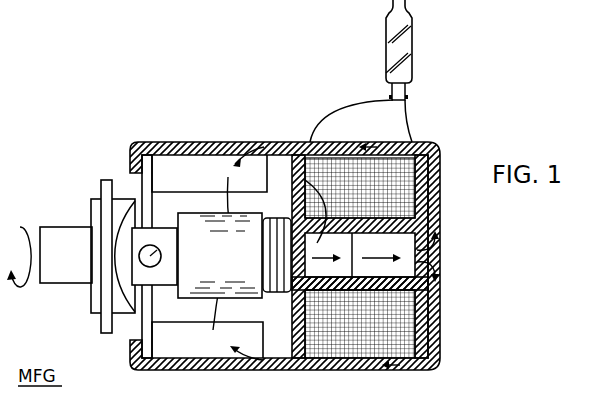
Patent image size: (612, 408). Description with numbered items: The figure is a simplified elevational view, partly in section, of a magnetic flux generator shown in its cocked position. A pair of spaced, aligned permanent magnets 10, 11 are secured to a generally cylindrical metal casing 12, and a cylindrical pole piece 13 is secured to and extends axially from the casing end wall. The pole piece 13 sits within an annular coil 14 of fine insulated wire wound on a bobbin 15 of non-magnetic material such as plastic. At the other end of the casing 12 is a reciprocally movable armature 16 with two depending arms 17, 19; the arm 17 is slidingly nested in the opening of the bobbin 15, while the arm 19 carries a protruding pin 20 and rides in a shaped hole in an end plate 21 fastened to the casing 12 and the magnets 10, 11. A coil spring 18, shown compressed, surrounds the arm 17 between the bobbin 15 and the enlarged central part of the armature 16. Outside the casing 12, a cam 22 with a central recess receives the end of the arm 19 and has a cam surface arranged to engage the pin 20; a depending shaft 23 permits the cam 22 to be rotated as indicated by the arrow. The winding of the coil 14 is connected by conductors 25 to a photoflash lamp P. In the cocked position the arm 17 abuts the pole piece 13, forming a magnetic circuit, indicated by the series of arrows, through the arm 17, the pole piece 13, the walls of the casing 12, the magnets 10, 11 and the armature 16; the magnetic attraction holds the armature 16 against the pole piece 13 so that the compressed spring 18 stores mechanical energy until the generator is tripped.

The permanent magnet 10 is at (185, 165).
The permanent magnet 11 is at (178, 348).
The metal casing 12 is at (312, 365).
The pole piece 13 is at (432, 224).
The annular coil 14 is at (405, 173).
The bobbin 15 is at (416, 287).
The armature 16 is at (190, 287).
The armature arm 17 is at (293, 182).
The coil spring 18 is at (273, 290).
The armature arm 19 is at (170, 259).
The pin 20 is at (153, 248).
The end plate 21 is at (143, 192).
The cam 22 is at (92, 208).
The shaft 23 is at (51, 280).
The conductors 25 is at (366, 100).
The photoflash lamp P is at (413, 35).